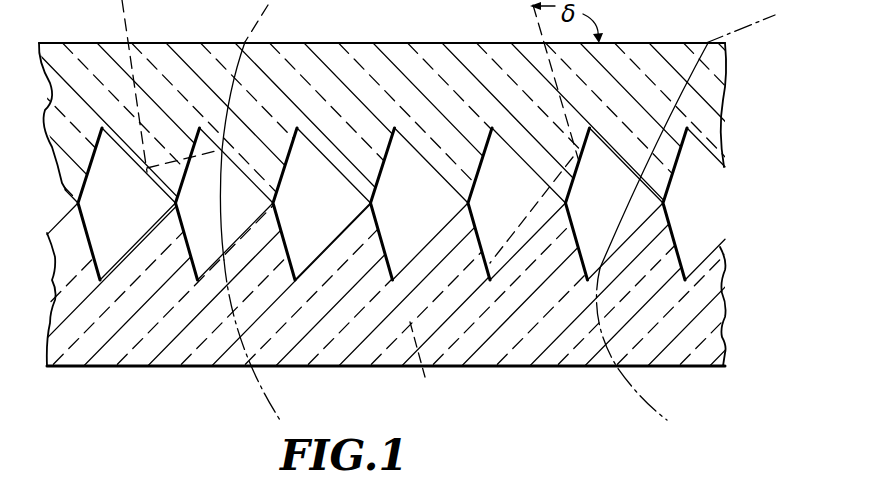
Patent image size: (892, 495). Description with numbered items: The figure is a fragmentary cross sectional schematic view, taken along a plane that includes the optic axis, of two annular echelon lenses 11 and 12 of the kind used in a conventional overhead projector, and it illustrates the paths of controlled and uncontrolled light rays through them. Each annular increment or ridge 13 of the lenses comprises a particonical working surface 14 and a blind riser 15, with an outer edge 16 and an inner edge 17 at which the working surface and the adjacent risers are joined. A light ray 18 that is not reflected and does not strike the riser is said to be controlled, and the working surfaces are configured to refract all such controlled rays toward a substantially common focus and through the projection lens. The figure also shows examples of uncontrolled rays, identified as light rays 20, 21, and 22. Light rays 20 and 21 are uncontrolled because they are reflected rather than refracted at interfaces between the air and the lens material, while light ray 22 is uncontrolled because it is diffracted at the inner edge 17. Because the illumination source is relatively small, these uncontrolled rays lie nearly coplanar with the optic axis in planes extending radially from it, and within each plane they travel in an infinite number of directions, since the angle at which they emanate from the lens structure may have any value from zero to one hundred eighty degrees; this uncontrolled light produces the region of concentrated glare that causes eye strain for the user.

The annular echelon lens 11 is at (727, 107).
The annular echelon lens 12 is at (719, 300).
The annular increment or ridge 13 is at (340, 180).
The particonical working surface 14 is at (128, 250).
The blind riser 15 is at (182, 237).
The outer edge 16 is at (173, 203).
The inner edge 17 is at (100, 280).
The light ray 18 is at (268, 6).
The light ray 20 is at (121, 12).
The light ray 21 is at (425, 377).
The light ray 22 is at (627, 197).